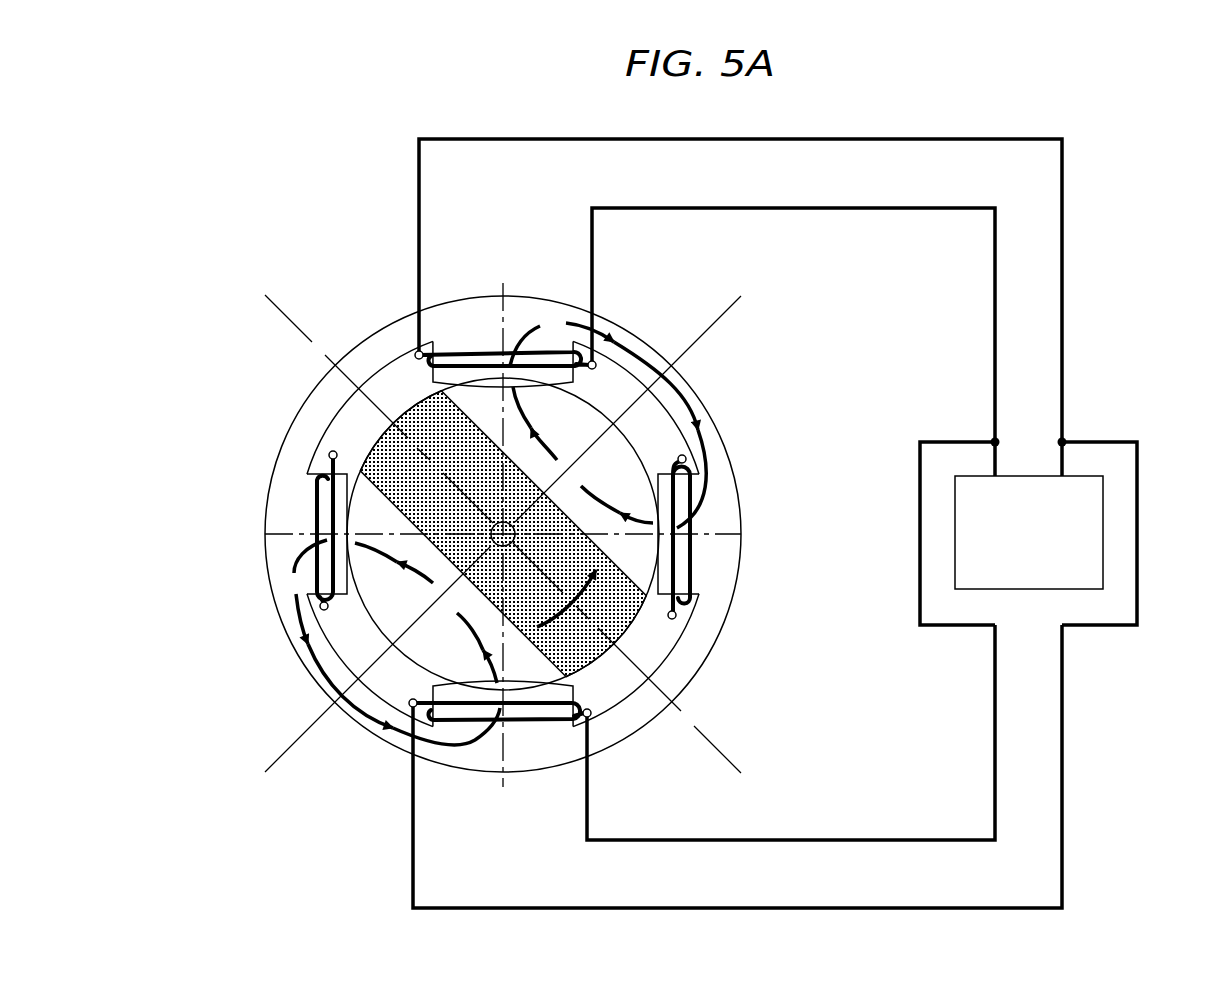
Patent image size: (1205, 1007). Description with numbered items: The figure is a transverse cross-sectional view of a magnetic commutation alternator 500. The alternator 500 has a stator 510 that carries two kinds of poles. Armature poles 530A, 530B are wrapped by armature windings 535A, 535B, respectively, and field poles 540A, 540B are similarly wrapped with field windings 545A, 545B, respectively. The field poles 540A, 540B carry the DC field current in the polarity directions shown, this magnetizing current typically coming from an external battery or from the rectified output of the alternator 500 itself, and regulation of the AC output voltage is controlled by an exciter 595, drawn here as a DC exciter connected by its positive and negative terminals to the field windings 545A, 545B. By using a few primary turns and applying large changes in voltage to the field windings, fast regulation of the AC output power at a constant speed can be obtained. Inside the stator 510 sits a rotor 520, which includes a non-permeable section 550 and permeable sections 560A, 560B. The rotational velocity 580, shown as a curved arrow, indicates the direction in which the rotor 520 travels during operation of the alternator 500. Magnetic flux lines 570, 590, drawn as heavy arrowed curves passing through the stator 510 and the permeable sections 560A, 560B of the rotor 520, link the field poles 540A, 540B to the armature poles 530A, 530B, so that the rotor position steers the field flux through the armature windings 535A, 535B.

The magnetic commutation alternator 500 is at (1156, 153).
The stator 510 is at (657, 352).
The rotor 520 is at (373, 640).
The armature pole 530A is at (327, 522).
The armature pole 530B is at (682, 527).
The armature winding 535A is at (317, 483).
The armature winding 535B is at (682, 544).
The field pole 540A is at (455, 352).
The field pole 540B is at (550, 712).
The field winding 545A is at (486, 345).
The field winding 545B is at (520, 723).
The non-permeable section 550 is at (613, 632).
The permeable section 560A is at (445, 663).
The permeable section 560B is at (557, 412).
The magnetic flux line 570 is at (690, 393).
The rotational velocity 580 is at (600, 632).
The magnetic flux line 590 is at (373, 720).
The exciter 595 is at (972, 476).